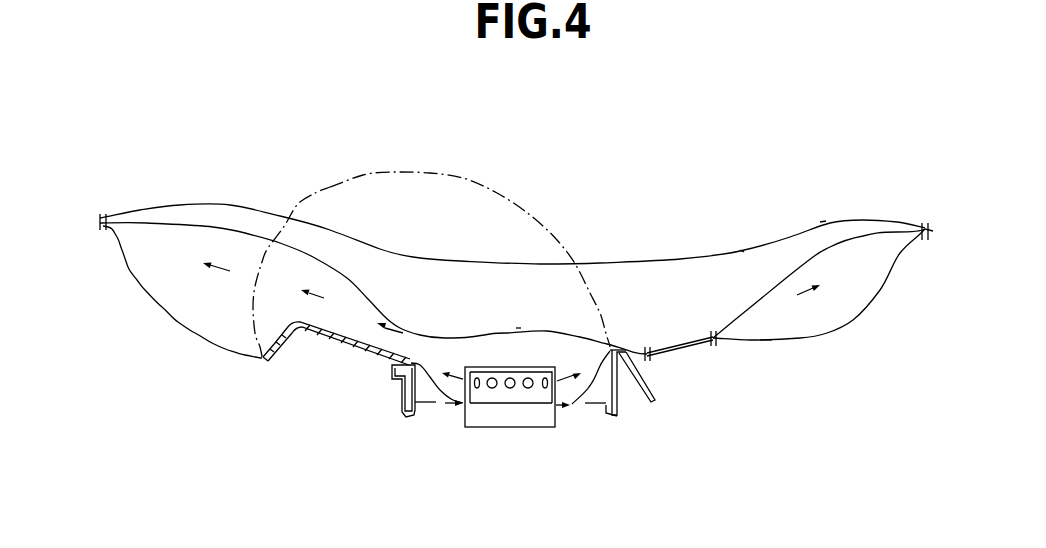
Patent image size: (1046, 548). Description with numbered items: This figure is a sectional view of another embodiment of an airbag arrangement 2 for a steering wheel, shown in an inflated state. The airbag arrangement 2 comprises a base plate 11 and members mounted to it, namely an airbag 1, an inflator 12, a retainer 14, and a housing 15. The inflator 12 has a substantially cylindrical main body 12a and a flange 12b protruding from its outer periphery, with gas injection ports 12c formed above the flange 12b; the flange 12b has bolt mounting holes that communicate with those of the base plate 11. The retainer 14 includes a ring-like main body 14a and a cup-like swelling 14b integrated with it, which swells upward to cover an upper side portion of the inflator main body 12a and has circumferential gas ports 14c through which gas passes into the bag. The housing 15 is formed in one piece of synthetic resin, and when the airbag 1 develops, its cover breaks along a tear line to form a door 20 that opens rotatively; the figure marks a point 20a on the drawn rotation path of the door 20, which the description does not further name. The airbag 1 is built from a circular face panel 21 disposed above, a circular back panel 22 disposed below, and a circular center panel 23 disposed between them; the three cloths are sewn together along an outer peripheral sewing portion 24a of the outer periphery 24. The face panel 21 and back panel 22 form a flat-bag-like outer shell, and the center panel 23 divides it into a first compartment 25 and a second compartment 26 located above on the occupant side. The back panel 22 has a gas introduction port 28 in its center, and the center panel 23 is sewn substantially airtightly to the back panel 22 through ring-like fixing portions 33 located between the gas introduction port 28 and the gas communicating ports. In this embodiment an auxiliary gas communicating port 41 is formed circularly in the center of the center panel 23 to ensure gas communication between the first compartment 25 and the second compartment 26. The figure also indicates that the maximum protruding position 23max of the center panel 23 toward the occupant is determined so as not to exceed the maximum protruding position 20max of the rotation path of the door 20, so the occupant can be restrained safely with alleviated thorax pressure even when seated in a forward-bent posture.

The airbag 1 is at (870, 218).
The airbag arrangement 2 is at (798, 178).
The base plate 11 is at (597, 403).
The inflator 12 is at (512, 403).
The inflator main body 12a is at (528, 403).
The flange 12b is at (490, 405).
The gas injection ports 12c is at (530, 378).
The retainer 14 is at (537, 367).
The retainer main body 14a is at (457, 405).
The swelling 14b is at (490, 367).
The gas ports 14c is at (463, 381).
The housing 15 is at (378, 355).
The door 20 is at (333, 340).
The chamber contour 20a is at (330, 187).
The maximum protruding position of the door rotation locus 20max is at (410, 172).
The face panel 21 is at (823, 222).
The back panel 22 is at (828, 336).
The center panel 23 is at (862, 238).
The maximum protruding position of the middle base cloth 23max is at (505, 332).
The outer periphery 24 is at (933, 231).
The outer peripheral sewing portion 24a is at (930, 227).
The first compartment 25 is at (766, 339).
The second compartment 26 is at (742, 267).
The gas introduction port 28 is at (553, 405).
The ring-like fixing portions 33 is at (713, 344).
The auxiliary gas communicating port 41 is at (519, 330).